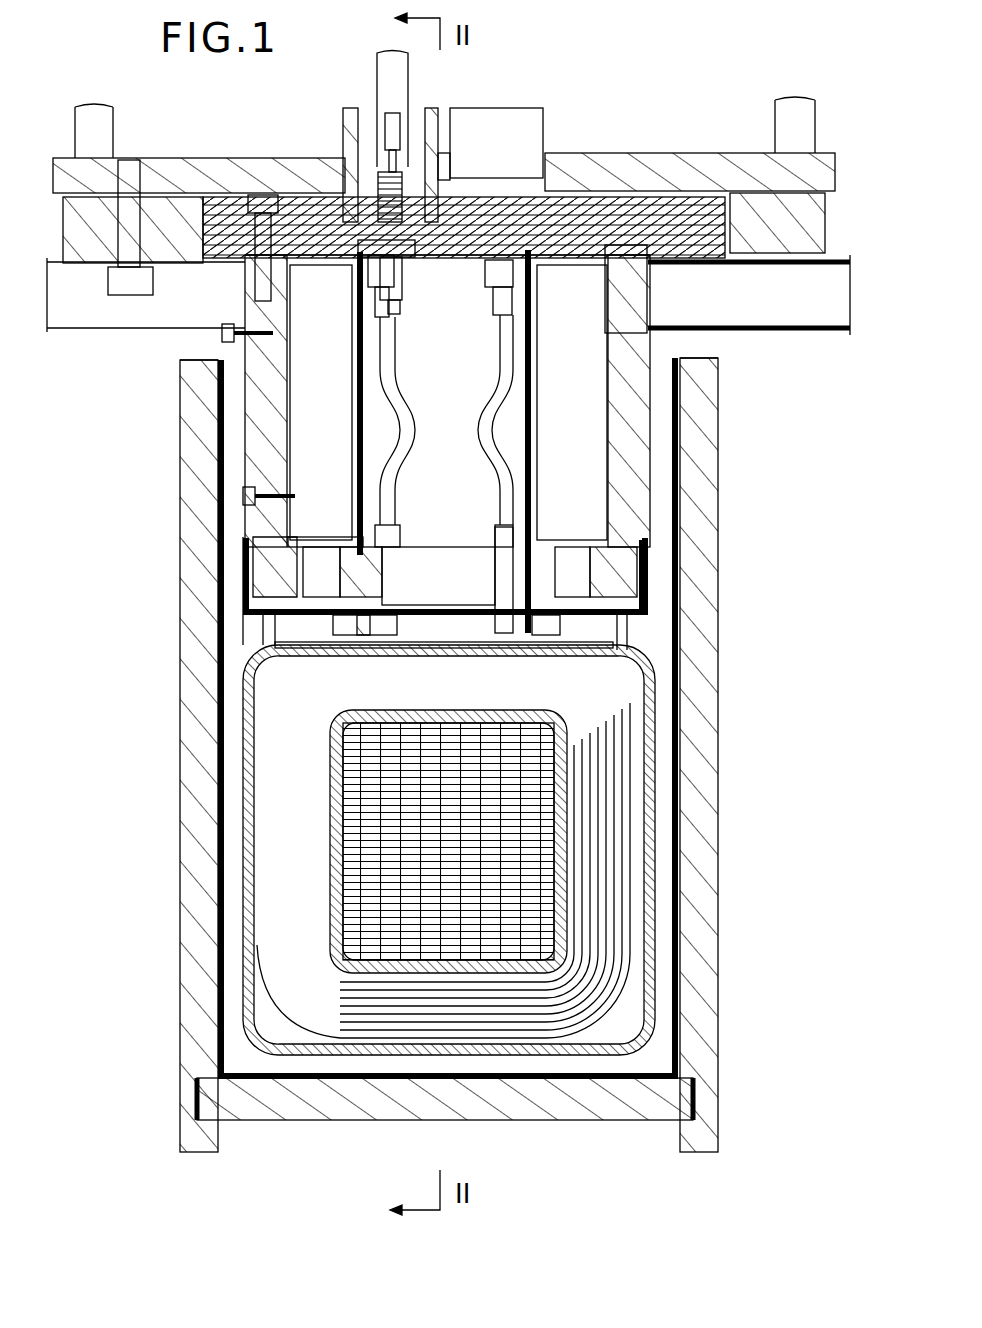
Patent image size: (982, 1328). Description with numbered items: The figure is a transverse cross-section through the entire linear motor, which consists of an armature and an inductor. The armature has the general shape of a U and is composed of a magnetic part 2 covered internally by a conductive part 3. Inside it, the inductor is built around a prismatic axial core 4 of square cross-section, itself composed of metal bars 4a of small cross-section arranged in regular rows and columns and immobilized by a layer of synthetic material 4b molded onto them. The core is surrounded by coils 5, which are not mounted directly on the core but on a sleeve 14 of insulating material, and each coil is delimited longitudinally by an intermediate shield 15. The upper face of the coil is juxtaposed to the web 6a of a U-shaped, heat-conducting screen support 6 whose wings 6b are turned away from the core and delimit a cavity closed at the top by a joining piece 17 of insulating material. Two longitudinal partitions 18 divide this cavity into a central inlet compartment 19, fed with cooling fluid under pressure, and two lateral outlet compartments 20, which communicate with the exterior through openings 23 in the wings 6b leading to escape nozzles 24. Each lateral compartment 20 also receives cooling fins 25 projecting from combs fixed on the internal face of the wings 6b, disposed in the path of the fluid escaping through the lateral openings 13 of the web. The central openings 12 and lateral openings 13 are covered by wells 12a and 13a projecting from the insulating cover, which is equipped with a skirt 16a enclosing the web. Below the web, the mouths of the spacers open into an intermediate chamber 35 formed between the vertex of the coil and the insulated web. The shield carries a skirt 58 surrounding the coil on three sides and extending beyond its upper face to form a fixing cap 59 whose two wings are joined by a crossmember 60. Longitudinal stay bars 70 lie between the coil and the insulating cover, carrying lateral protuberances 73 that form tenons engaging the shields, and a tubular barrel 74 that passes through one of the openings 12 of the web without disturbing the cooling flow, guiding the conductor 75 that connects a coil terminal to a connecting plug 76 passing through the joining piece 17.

The magnetic part 2 is at (195, 908).
The conductive part 3 is at (262, 1060).
The axial core 4 is at (565, 841).
The metal bars 4a is at (600, 832).
The layer of synthetic material 4b is at (520, 825).
The coils 5 is at (597, 970).
The screen support 6 is at (668, 513).
The web 6a is at (270, 575).
The wings 6b is at (195, 440).
The central openings 12 is at (385, 576).
The wells 12a is at (408, 565).
The lateral openings 13 is at (313, 625).
The wells 13a is at (318, 572).
The sleeve 14 is at (565, 748).
The intermediate shield 15 is at (240, 772).
The skirt 16a is at (625, 560).
The joining piece 17 is at (585, 215).
The longitudinal partitions 18 is at (440, 401).
The central inlet compartment 19 is at (460, 364).
The lateral outlet compartments 20 is at (330, 338).
The openings 23 is at (630, 265).
The escape nozzles 24 is at (115, 310).
The cooling fins 25 is at (573, 410).
The intermediate chamber 35 is at (585, 632).
The skirt 58 is at (245, 845).
The fixing cap 59 is at (645, 580).
The crossmember 60 is at (640, 625).
The stay bars 70 is at (485, 590).
The lateral protuberances 73 is at (520, 625).
The tubular barrel 74 is at (505, 540).
The conductor 75 is at (492, 432).
The connecting plug 76 is at (392, 138).